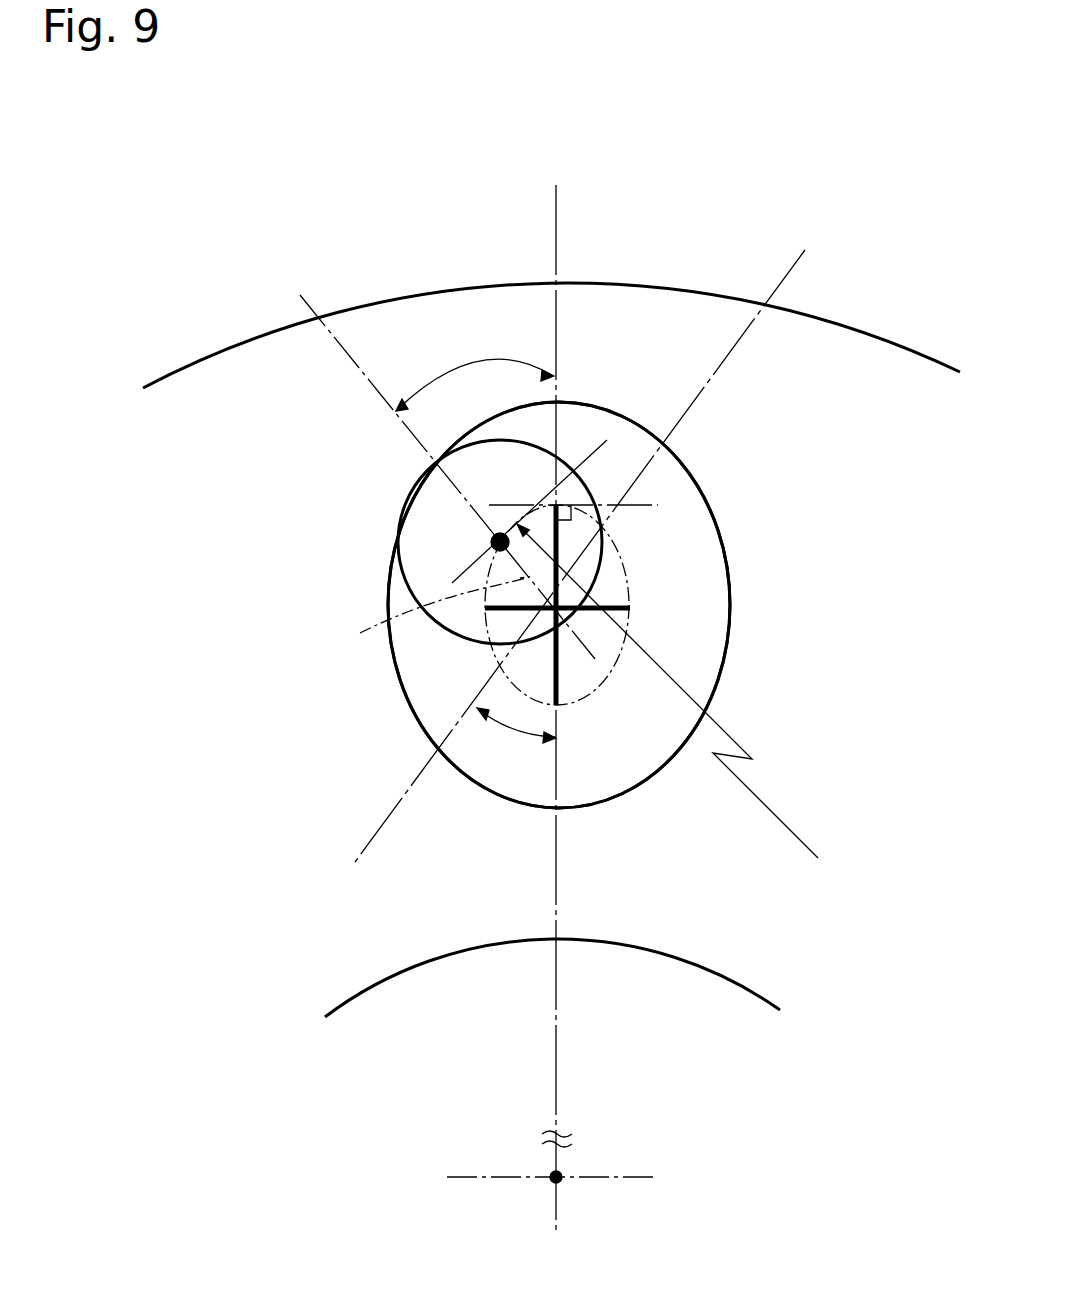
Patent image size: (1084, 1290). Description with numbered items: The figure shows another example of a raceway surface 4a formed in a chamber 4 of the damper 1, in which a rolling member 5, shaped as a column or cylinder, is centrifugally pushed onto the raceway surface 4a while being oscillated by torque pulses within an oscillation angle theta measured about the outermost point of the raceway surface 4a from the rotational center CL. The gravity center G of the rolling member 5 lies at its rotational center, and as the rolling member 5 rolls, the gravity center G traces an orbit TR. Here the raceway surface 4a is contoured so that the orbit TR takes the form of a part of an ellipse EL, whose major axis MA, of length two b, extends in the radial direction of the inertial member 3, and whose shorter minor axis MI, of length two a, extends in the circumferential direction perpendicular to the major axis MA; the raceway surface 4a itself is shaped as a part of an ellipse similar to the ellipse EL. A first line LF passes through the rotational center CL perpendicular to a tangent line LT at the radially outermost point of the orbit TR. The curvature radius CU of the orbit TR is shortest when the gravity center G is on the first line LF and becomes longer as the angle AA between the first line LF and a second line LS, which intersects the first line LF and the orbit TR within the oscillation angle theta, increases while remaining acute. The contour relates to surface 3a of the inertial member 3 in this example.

The damper 1 is at (767, 182).
The inertial member 3 is at (848, 352).
The inner surface of member 3 3a is at (453, 955).
The chamber 4 is at (690, 660).
The raceway surface 4a is at (718, 612).
The rolling member 5 is at (423, 563).
The gravity center G is at (500, 542).
The first line LF is at (554, 233).
The second line LS is at (775, 290).
The tangent line LT is at (648, 505).
The ellipse EL is at (628, 567).
The major axis MA is at (557, 688).
The minor axis MI is at (516, 613).
The orbit TR is at (425, 612).
The curvature radius CU is at (676, 691).
The angle AA is at (516, 738).
The oscillation angle theta is at (475, 375).
The rotational center CL is at (562, 1173).